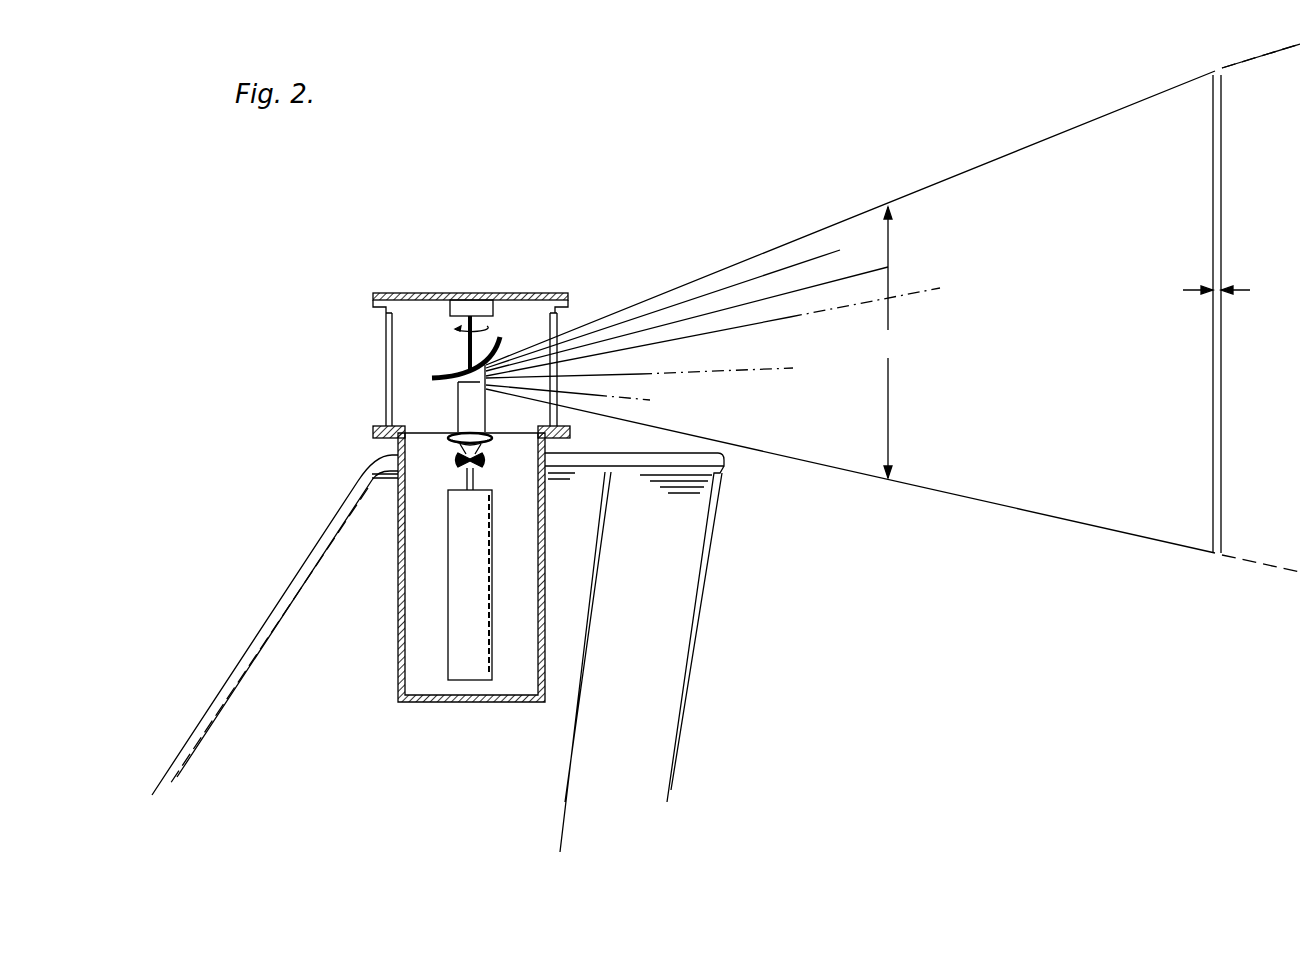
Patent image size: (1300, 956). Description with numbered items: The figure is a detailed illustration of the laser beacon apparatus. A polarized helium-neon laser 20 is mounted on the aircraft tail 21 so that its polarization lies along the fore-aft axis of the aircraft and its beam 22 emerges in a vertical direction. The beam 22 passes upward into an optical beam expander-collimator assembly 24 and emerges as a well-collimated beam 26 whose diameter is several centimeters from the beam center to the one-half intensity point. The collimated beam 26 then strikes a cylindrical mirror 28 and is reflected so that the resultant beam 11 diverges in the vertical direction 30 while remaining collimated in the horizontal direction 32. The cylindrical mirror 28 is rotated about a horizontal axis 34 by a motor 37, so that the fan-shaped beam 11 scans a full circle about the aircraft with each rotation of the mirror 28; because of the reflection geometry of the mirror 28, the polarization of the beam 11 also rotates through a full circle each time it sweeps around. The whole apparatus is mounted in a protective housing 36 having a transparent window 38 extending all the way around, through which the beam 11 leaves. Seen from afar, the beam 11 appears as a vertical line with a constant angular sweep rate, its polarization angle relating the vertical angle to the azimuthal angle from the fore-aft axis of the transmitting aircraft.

The resultant beam 11 is at (938, 492).
The polarized helium-neon laser 20 is at (475, 523).
The aircraft tail 21 is at (370, 508).
The beam 22 is at (475, 470).
The optical beam expander-collimator assembly 24 is at (485, 459).
The collimated beam 26 is at (458, 418).
The cylindrical mirror 28 is at (457, 371).
The vertical direction 30 is at (890, 342).
The horizontal direction 32 is at (1231, 314).
The horizontal axis 34 is at (467, 352).
The protective housing 36 is at (404, 292).
The motor 37 is at (477, 304).
The transparent window 38 is at (387, 367).